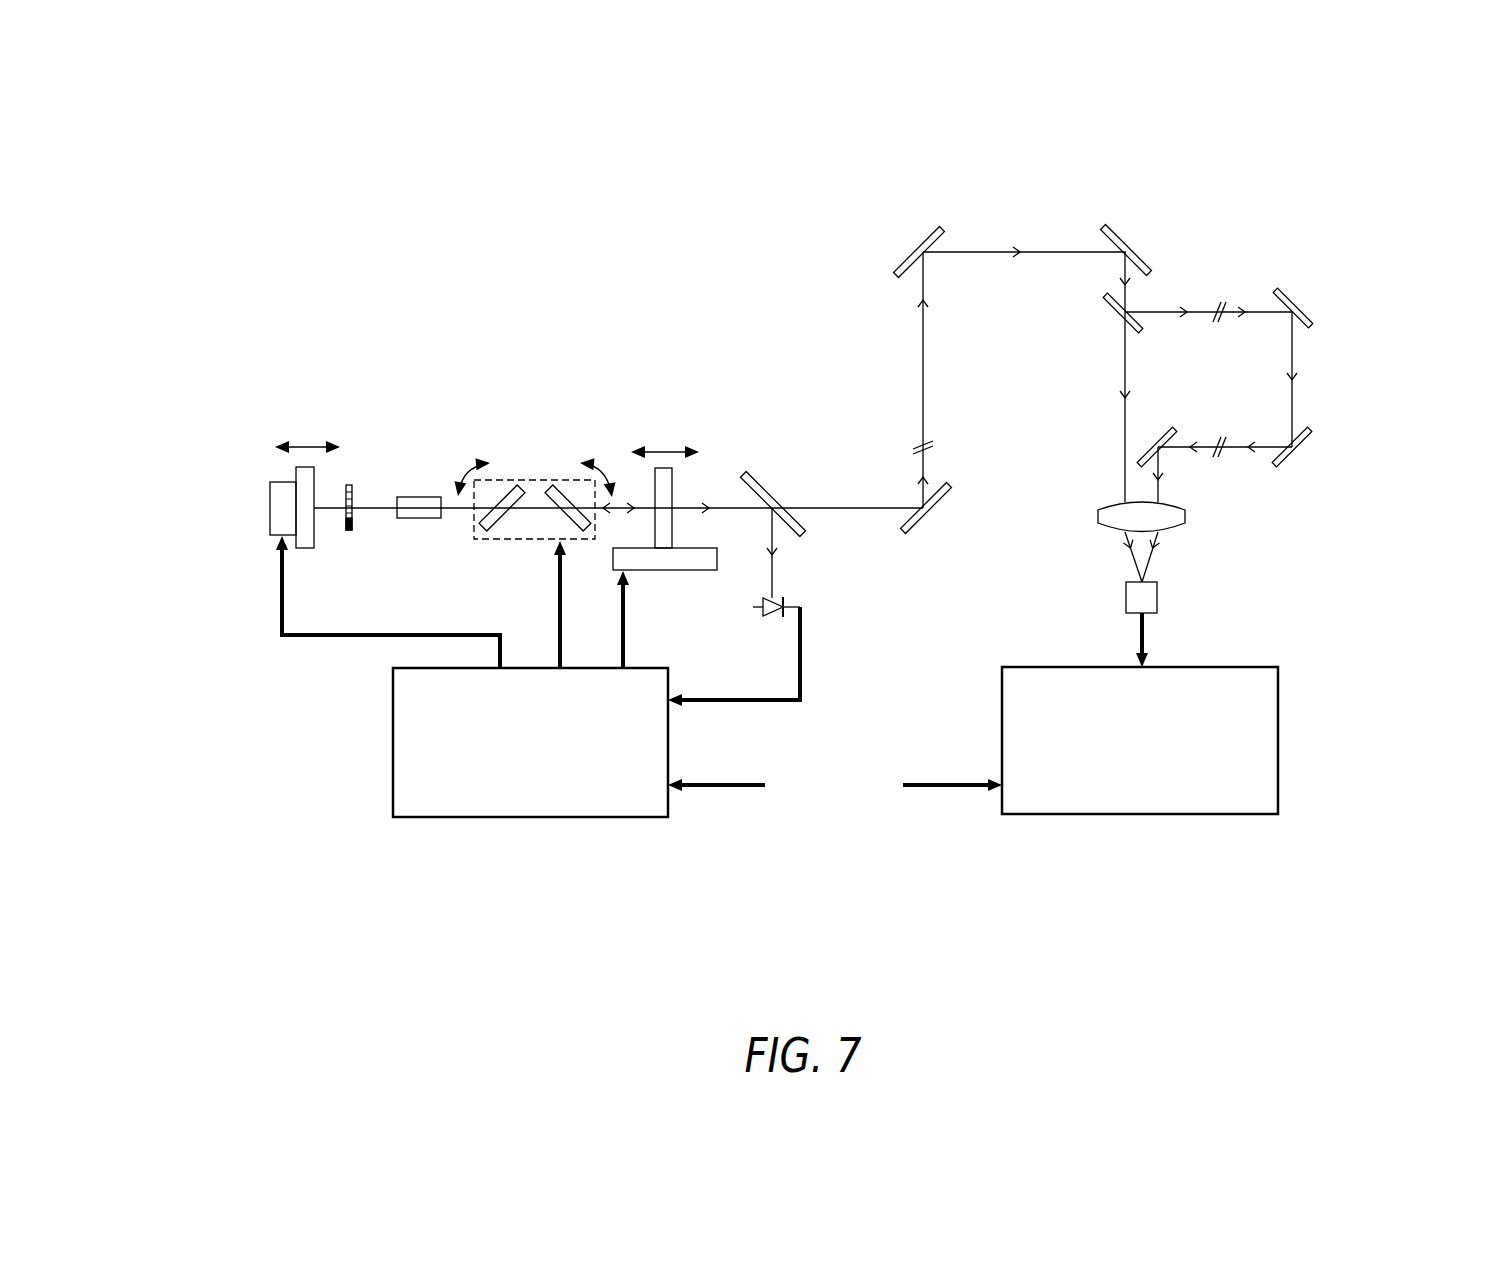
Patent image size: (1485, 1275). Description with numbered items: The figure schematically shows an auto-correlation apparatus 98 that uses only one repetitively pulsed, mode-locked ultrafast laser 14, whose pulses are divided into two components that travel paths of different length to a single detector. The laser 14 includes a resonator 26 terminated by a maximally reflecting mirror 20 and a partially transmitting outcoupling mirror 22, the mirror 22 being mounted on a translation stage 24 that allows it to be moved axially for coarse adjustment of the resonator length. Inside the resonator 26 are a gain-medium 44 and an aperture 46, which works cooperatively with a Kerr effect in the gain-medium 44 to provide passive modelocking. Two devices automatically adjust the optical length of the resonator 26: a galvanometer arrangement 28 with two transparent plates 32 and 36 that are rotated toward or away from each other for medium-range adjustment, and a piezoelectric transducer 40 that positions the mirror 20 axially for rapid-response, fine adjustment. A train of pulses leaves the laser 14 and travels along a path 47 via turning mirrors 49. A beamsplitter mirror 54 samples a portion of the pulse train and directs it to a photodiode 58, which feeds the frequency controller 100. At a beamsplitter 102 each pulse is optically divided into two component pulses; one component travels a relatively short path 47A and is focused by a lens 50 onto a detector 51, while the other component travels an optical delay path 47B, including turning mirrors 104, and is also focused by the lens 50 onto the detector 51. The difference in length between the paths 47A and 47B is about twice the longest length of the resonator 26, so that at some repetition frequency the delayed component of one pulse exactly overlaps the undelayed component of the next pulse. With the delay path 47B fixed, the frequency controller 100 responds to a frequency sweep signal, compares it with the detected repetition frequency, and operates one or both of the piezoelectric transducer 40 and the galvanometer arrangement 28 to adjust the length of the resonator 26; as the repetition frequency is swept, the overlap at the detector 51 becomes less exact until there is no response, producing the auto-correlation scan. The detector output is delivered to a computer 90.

The laser 14 is at (400, 377).
The maximally reflecting mirror 20 is at (305, 548).
The partially transmitting mirror 22 is at (667, 488).
The translation stage 24 is at (685, 565).
The resonator 26 is at (424, 547).
The galvanometer arrangement 28 is at (506, 550).
The transparent plate 32 is at (513, 487).
The transparent plate 36 is at (558, 487).
The piezoelectric transducer 40 is at (272, 530).
The gain-medium 44 is at (411, 500).
The aperture 46 is at (352, 528).
The path 47 is at (840, 505).
The short path 47A is at (1123, 362).
The optical delay path 47B is at (1233, 310).
The turning mirrors 49 is at (940, 503).
The lens 50 is at (1170, 505).
The detector 51 is at (1152, 597).
The beamsplitter mirror 54 is at (762, 478).
The photodiode 58 is at (765, 630).
The computer 90 is at (1043, 814).
The apparatus 98 is at (948, 968).
The frequency controller 100 is at (488, 817).
The beamsplitter 102 is at (1108, 302).
The turning mirrors 104 is at (1288, 302).